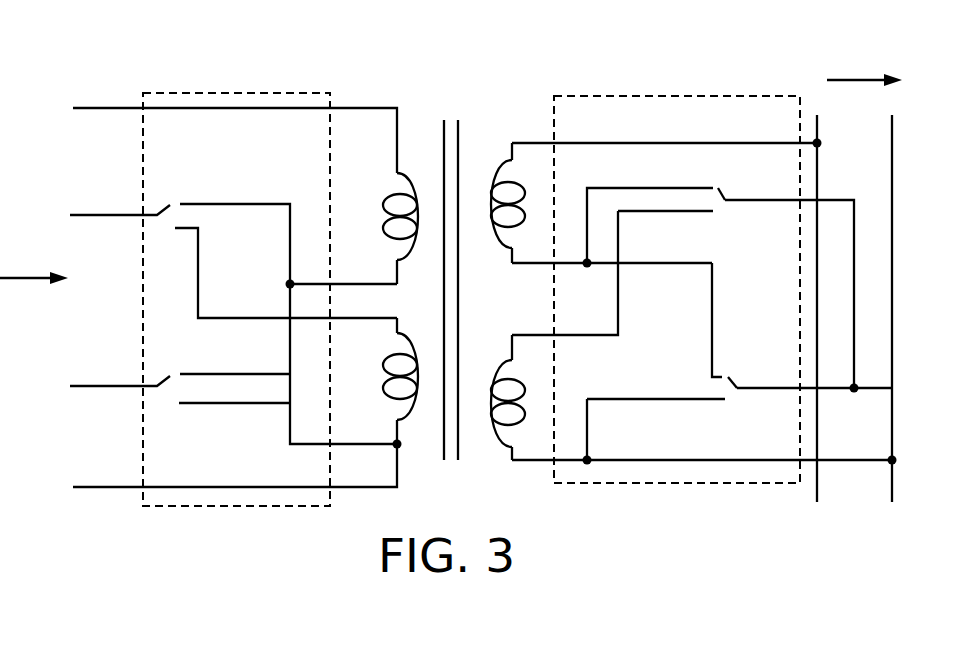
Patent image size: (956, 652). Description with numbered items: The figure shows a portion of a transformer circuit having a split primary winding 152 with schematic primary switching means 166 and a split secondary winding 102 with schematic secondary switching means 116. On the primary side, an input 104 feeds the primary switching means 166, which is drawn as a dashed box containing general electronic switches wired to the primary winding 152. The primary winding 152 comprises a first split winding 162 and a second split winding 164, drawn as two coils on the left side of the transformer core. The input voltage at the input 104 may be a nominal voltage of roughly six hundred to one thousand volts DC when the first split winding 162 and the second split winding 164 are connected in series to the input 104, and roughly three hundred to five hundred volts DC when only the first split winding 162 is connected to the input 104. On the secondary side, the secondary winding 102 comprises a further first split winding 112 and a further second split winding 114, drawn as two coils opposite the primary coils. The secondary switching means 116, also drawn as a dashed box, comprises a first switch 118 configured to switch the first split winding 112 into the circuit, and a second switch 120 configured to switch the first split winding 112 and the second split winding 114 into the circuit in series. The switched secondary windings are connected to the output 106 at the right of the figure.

The split secondary winding 102 is at (509, 101).
The input 104 is at (22, 276).
The output power 106 is at (853, 78).
The further first split winding 112 is at (497, 250).
The further second split winding 114 is at (498, 449).
The secondary switching means 116 is at (702, 253).
The first switch 118 is at (726, 203).
The second switch 120 is at (737, 391).
The split primary winding 152 is at (254, 255).
The first split winding 162 is at (392, 198).
The second split winding 164 is at (389, 384).
The primary switching means 166 is at (233, 82).